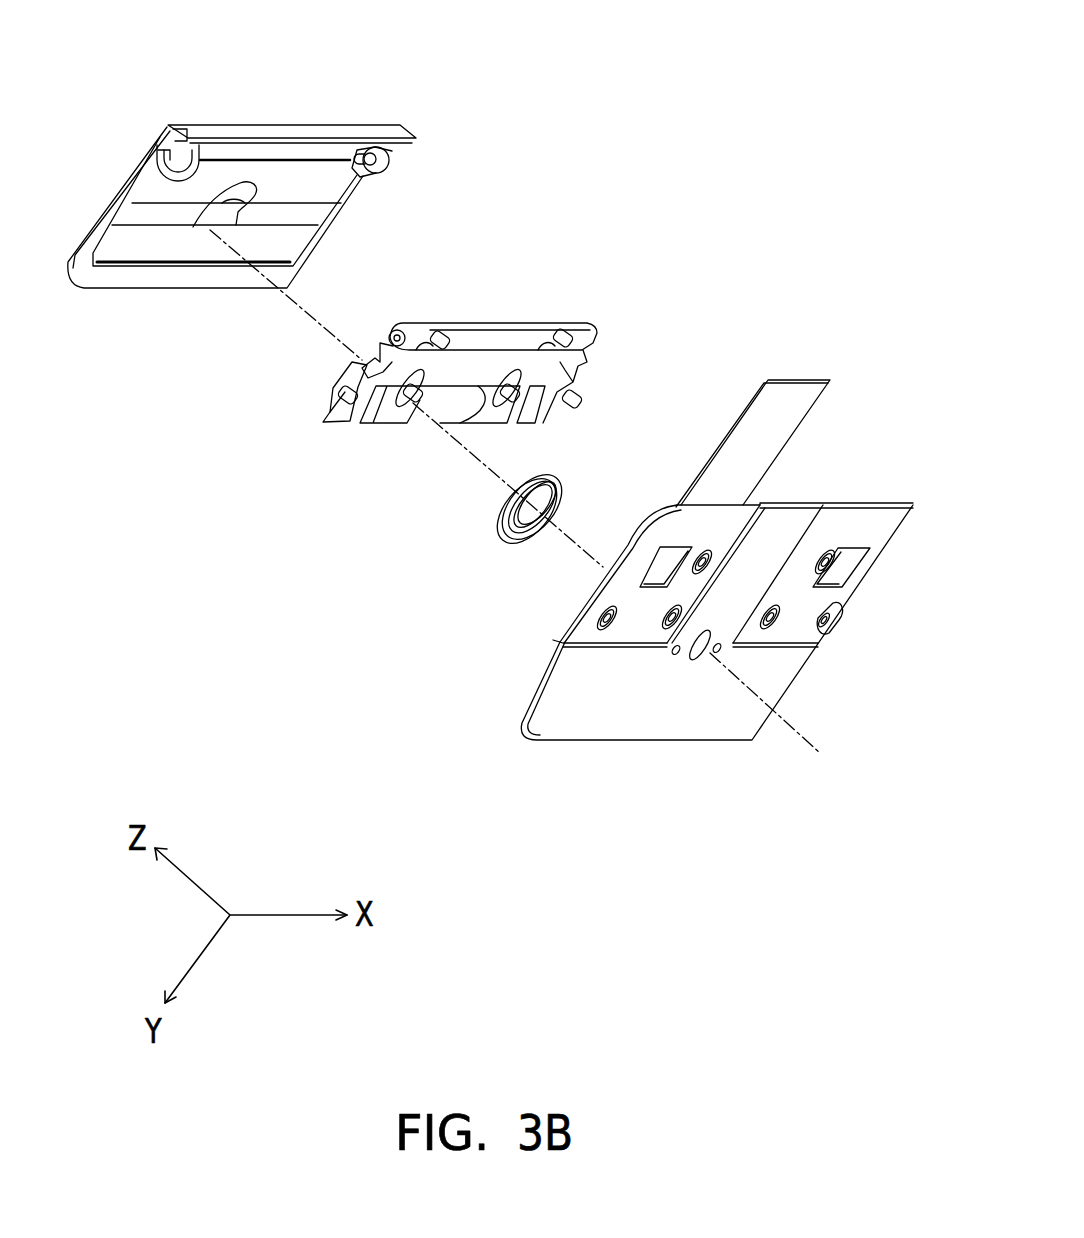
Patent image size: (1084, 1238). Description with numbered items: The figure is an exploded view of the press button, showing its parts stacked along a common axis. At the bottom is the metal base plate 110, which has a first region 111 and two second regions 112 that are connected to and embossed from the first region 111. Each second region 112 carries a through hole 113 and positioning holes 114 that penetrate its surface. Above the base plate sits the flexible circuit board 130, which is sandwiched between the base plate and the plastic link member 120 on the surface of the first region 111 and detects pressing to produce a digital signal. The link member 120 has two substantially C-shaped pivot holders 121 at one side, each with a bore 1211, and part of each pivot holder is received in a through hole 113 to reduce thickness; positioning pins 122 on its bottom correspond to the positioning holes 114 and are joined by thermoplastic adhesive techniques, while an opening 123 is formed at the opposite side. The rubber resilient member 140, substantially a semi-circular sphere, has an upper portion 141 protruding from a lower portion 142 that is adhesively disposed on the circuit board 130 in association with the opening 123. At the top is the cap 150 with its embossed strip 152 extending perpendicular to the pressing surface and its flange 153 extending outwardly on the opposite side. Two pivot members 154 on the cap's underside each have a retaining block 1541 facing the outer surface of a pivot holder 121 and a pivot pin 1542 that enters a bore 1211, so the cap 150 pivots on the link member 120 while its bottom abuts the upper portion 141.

The base plate 110 is at (869, 497).
The first region 111 is at (742, 717).
The second region 112 is at (878, 532).
The through hole 113 is at (843, 563).
The positioning hole 114 is at (826, 630).
The link member 120 is at (588, 306).
The pivot holder 121 is at (418, 330).
The bore 1211 is at (380, 336).
The positioning pin 122 is at (353, 403).
The opening 123 is at (444, 405).
The circuit board 130 is at (803, 372).
The resilient member 140 is at (380, 558).
The upper portion 141 is at (510, 503).
The lower portion 142 is at (512, 541).
The cap 150 is at (120, 136).
The embossed strip 152 is at (382, 130).
The flange 153 is at (102, 281).
The pivot member 154 is at (538, 140).
The retaining block 1541 is at (392, 158).
The pivot pin 1542 is at (370, 177).